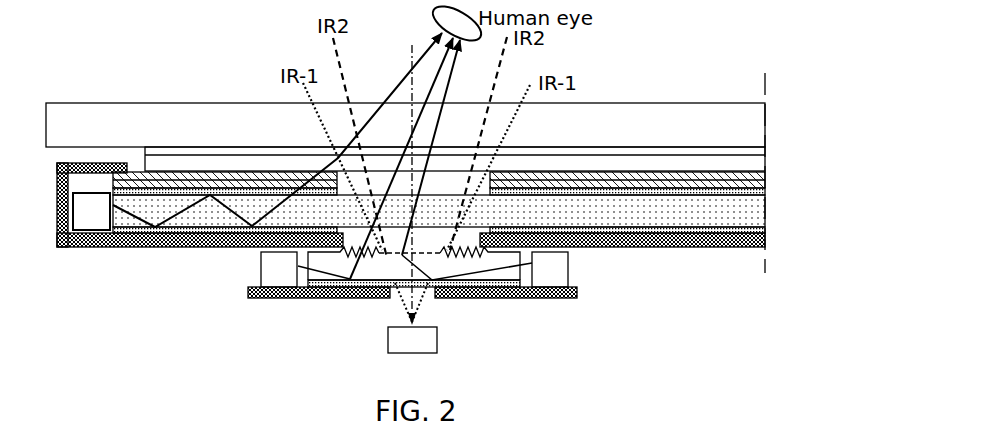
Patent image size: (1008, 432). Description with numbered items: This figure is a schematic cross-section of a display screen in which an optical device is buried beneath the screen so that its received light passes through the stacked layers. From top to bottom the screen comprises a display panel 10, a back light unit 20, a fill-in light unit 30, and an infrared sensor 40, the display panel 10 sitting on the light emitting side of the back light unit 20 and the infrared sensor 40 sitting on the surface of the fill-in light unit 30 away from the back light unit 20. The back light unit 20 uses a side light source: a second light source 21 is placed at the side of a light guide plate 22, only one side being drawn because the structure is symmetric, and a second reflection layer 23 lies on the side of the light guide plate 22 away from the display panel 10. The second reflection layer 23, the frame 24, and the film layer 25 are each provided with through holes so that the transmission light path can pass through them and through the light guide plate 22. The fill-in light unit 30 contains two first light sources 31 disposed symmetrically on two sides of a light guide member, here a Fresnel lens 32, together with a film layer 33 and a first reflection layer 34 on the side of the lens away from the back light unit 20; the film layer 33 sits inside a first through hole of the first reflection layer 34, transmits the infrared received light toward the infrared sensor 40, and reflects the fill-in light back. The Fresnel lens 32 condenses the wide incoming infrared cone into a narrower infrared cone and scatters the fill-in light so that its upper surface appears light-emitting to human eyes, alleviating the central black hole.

The display panel 10 is at (202, 102).
The back light unit 20 is at (68, 256).
The second light source 21 is at (95, 223).
The light guide plate 22 is at (685, 215).
The second reflection layer 23 is at (607, 231).
The frame 24 is at (145, 237).
The film layer 25 is at (572, 183).
The fill-in light unit 30 is at (198, 305).
The first light source 31 is at (267, 274).
The Fresnel lens 32 is at (500, 277).
The film layer 33 is at (320, 287).
The first reflection layer 34 is at (260, 298).
The infrared sensor 40 is at (412, 199).